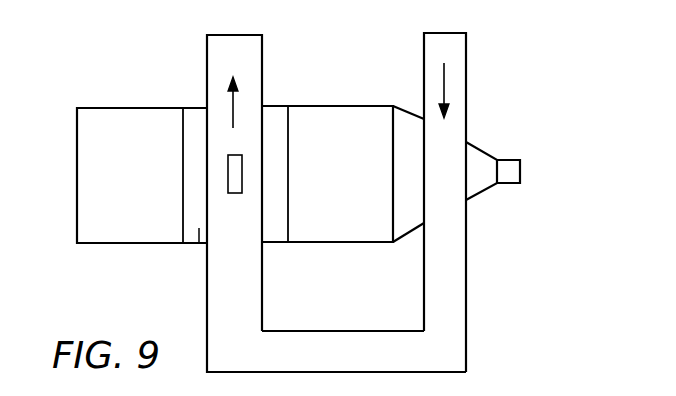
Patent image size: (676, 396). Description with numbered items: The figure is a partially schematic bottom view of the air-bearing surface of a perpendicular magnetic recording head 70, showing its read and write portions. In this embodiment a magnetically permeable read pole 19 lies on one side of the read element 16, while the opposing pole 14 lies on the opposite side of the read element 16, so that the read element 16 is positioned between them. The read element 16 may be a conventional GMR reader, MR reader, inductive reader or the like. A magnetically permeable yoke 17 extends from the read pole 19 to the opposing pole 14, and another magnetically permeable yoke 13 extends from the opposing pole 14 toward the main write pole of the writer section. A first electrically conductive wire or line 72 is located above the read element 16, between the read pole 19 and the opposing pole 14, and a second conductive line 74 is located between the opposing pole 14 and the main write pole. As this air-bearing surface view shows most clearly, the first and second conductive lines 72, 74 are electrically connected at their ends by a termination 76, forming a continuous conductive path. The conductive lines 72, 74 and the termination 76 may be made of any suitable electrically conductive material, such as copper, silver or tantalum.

The perpendicular magnetic recording head 70 is at (103, 85).
The first electrically conductive line 72 is at (253, 63).
The second conductive line 74 is at (458, 58).
The termination 76 is at (346, 343).
The read pole 19 is at (143, 191).
The opposing pole 14 is at (356, 190).
The yoke 13 is at (410, 127).
The read element 16 is at (233, 186).
The yoke 17 is at (199, 243).